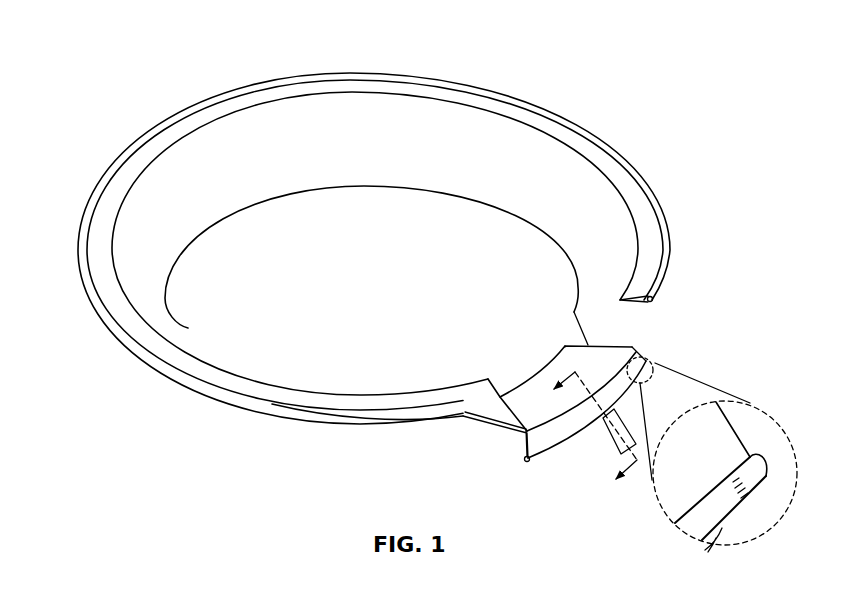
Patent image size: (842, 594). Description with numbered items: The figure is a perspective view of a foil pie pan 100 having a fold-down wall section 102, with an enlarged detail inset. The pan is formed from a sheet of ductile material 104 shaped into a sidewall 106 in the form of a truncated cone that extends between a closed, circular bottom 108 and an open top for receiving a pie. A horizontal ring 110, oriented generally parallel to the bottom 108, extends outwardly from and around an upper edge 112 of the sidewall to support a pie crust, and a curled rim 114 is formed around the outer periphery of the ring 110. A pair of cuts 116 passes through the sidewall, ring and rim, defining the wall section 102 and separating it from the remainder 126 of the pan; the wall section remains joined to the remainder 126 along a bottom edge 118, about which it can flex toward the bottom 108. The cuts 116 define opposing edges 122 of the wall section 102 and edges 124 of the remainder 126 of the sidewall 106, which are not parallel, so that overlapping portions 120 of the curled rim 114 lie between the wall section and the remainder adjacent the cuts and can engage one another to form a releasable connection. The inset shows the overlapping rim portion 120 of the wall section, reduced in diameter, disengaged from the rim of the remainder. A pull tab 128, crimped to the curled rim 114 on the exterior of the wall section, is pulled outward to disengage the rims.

The pie pan 100 is at (130, 41).
The fold-down wall section 102 is at (622, 343).
The sheet of ductile material 104 is at (263, 100).
The sidewall 106 is at (493, 160).
The bottom 108 is at (178, 347).
The horizontal ring 110 is at (640, 213).
The upper edge 112 is at (617, 167).
The curled rim 114 is at (588, 128).
The pair of cuts 116 is at (625, 301).
The bottom edge 118 is at (563, 348).
The overlapping portions 120 is at (755, 475).
The edges of the wall section 122 is at (589, 343).
The edges of the remainder 124 is at (590, 345).
The remainder of the pan 126 is at (405, 113).
The pull tab 128 is at (616, 423).